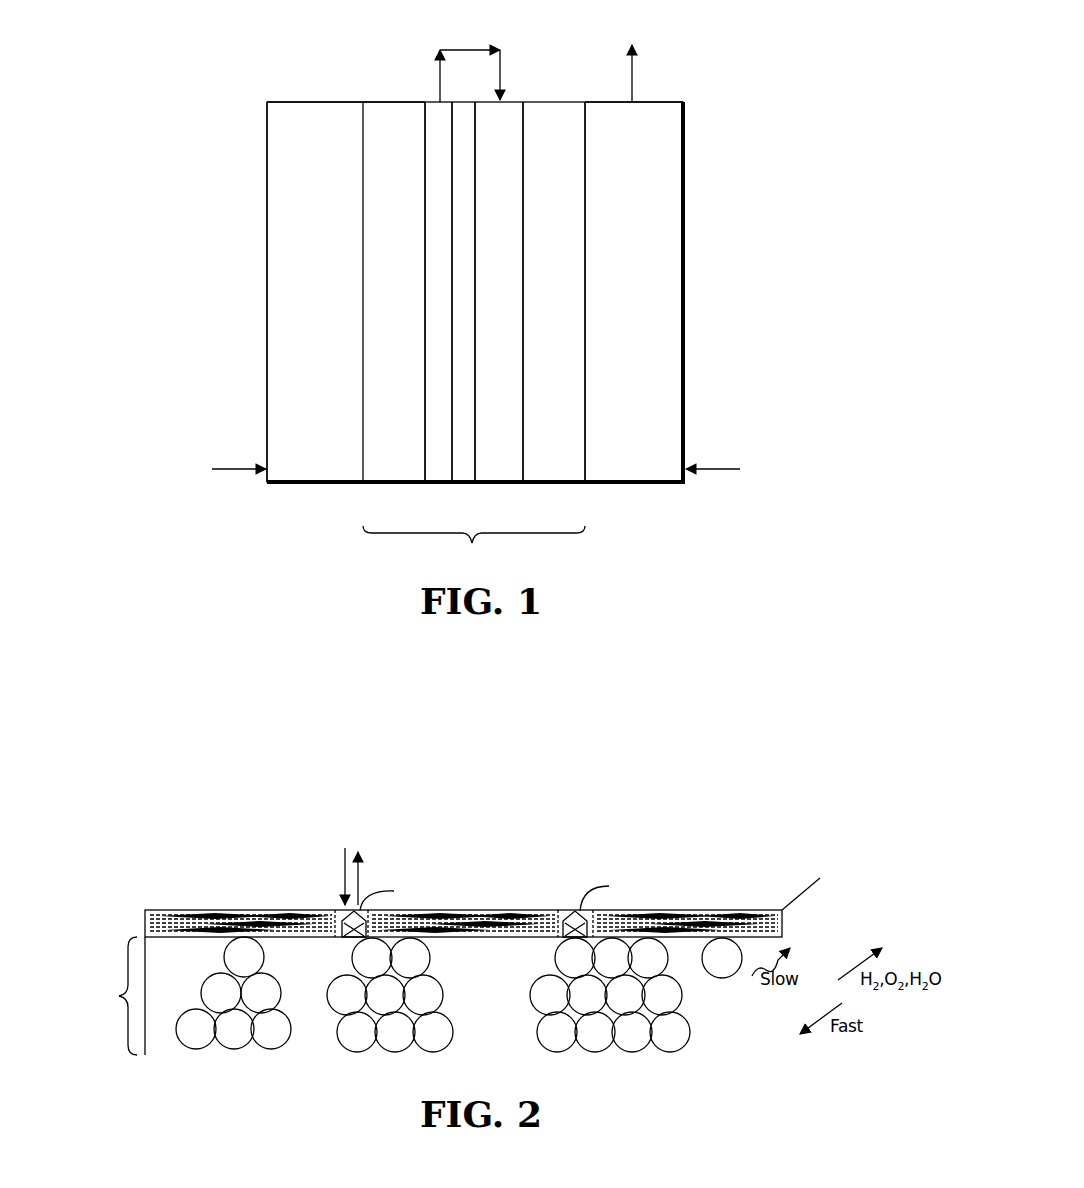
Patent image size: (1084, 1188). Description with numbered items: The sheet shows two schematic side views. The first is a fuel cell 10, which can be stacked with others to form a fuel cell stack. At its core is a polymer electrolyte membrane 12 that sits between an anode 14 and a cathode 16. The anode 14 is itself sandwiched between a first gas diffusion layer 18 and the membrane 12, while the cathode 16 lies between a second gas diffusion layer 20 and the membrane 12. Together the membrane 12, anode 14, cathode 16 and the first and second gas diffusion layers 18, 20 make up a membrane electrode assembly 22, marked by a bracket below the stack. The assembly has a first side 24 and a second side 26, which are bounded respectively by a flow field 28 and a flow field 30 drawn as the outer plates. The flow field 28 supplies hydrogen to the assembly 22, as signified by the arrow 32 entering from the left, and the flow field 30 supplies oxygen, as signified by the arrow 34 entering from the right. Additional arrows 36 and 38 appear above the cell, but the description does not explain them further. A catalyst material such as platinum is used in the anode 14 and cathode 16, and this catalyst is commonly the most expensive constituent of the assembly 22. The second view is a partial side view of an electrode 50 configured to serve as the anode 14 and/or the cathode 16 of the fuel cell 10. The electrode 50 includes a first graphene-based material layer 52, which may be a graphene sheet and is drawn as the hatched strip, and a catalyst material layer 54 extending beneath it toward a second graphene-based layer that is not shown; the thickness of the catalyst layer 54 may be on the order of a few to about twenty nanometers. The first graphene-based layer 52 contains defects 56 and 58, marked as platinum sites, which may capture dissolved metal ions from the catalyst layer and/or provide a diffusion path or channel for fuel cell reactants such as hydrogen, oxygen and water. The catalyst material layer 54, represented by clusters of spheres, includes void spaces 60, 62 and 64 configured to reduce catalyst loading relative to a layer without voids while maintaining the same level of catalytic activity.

In FIG. 1, the fuel cell 10 is at (742, 230).
In FIG. 1, the polymer electrolyte membrane 12 is at (455, 101).
In FIG. 1, the anode 14 is at (437, 486).
In FIG. 1, the cathode 16 is at (498, 486).
In FIG. 1, the first gas diffusion layer 18 is at (393, 101).
In FIG. 1, the second gas diffusion layer 20 is at (553, 101).
In FIG. 1, the membrane electrode assembly 22 is at (474, 528).
In FIG. 1, the first side 24 is at (363, 101).
In FIG. 1, the second side 26 is at (585, 101).
In FIG. 1, the flow field 28 is at (300, 101).
In FIG. 1, the flow field 30 is at (667, 101).
In FIG. 1, the arrow 32 is at (230, 464).
In FIG. 1, the arrow 34 is at (720, 464).
In FIG. 1, the electron path 36 is at (437, 85).
In FIG. 1, the water and heat outlet 38 is at (635, 90).
In FIG. 2, the electrode 50 is at (118, 1068).
In FIG. 2, the first graphene-based material layer 52 is at (153, 909).
In FIG. 2, the catalyst material layer 54 is at (116, 996).
In FIG. 2, the defect 56 is at (340, 906).
In FIG. 2, the defect 58 is at (562, 906).
In FIG. 2, the void space 60 is at (318, 1014).
In FIG. 2, the void space 62 is at (502, 1014).
In FIG. 2, the void space 64 is at (742, 1014).